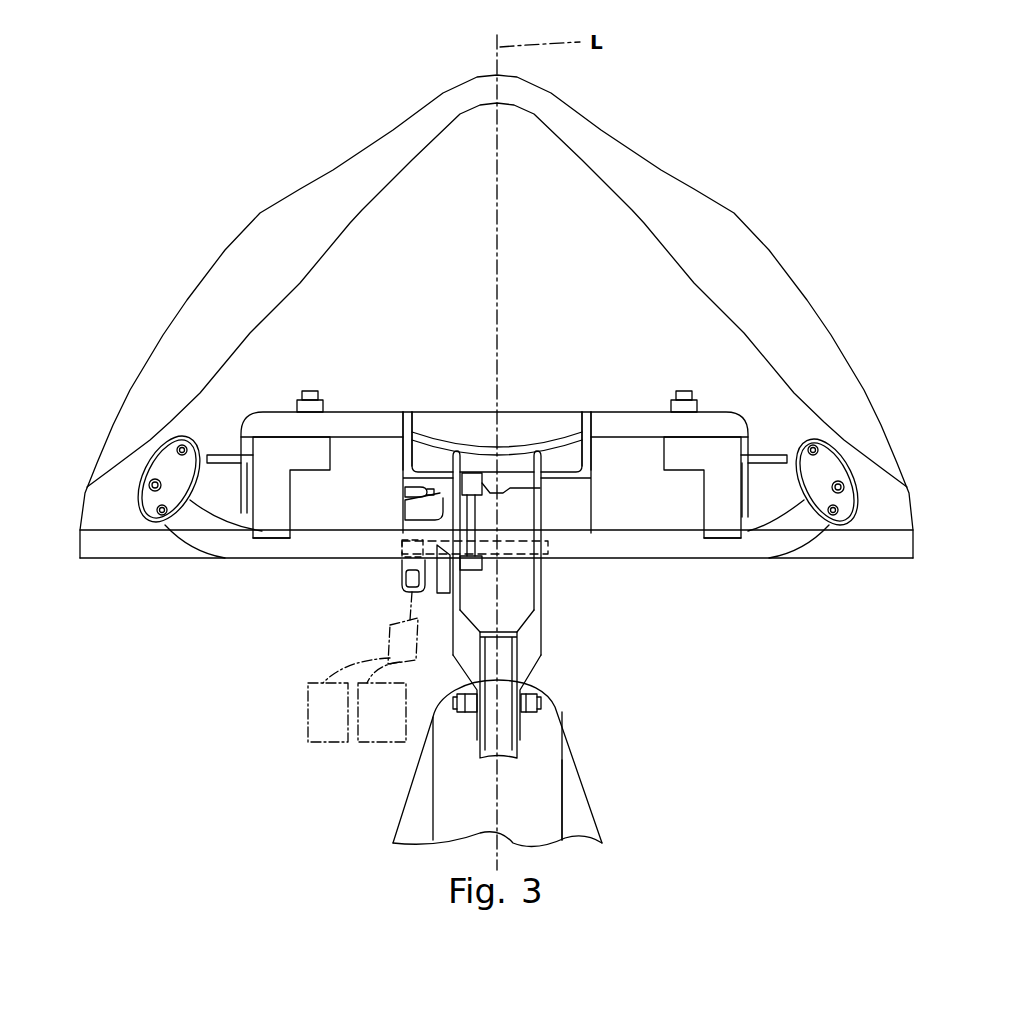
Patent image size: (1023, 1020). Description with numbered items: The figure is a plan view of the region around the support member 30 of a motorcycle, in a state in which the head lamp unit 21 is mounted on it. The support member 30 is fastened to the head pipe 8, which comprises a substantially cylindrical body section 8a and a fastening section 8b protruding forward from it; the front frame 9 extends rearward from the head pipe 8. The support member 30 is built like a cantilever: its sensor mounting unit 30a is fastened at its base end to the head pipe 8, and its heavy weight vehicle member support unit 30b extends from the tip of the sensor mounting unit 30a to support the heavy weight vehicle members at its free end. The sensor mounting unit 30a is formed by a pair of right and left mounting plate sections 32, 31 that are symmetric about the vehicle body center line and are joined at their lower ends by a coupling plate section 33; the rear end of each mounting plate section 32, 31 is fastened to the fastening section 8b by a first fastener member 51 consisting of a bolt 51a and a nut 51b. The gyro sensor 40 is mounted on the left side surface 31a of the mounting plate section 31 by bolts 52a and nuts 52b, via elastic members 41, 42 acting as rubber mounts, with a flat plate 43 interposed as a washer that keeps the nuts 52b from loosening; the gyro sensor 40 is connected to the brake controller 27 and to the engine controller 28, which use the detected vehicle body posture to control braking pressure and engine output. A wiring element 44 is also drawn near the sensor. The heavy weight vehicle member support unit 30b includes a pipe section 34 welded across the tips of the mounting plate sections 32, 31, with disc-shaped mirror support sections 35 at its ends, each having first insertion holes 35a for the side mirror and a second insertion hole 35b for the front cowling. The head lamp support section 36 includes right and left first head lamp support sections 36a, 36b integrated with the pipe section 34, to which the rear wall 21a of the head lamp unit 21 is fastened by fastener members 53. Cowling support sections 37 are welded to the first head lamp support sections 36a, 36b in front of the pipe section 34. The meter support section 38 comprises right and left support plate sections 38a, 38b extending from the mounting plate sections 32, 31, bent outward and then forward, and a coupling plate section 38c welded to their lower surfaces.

The head lamp unit 21 is at (728, 195).
The rear wall 21a is at (102, 548).
The fastener members 53 is at (289, 392).
The cowling support sections 37 is at (205, 458).
The mirror support sections 35 is at (150, 522).
The first insertion holes 35a is at (845, 486).
The second insertion hole 35b is at (852, 500).
The elastic member 42 is at (462, 470).
The nuts 52b is at (493, 478).
The coupling plate section 38c is at (527, 457).
The support plate section 38b is at (403, 447).
The support plate section 38a is at (592, 465).
The meter support section 38 is at (587, 500).
The bolts 52a is at (405, 492).
The elastic member 41 is at (410, 504).
The flat plate 43 is at (470, 513).
The support member 30 is at (220, 568).
The sensor mounting unit 30a is at (553, 577).
The heavy weight vehicle member support unit 30b is at (866, 658).
The coupling plate section 33 is at (523, 597).
The mounting plate section 32 is at (543, 640).
The mounting plate section 31 is at (453, 655).
The left side surface 31a is at (453, 612).
The wiring harness 44 is at (390, 633).
The gyro sensor 40 is at (390, 583).
The head lamp support section 36 is at (742, 556).
The first head lamp support section 36a is at (713, 545).
The first head lamp support section 36b is at (285, 540).
The pipe section 34 is at (724, 550).
The first fastener member 51 is at (548, 713).
The bolt 51a is at (538, 698).
The nut 51b is at (467, 713).
The head pipe 8 is at (578, 795).
The body section 8a is at (565, 713).
The fastening section 8b is at (490, 745).
The front frame 9 is at (587, 827).
The brake controller 27 is at (365, 743).
The engine controller 28 is at (318, 743).